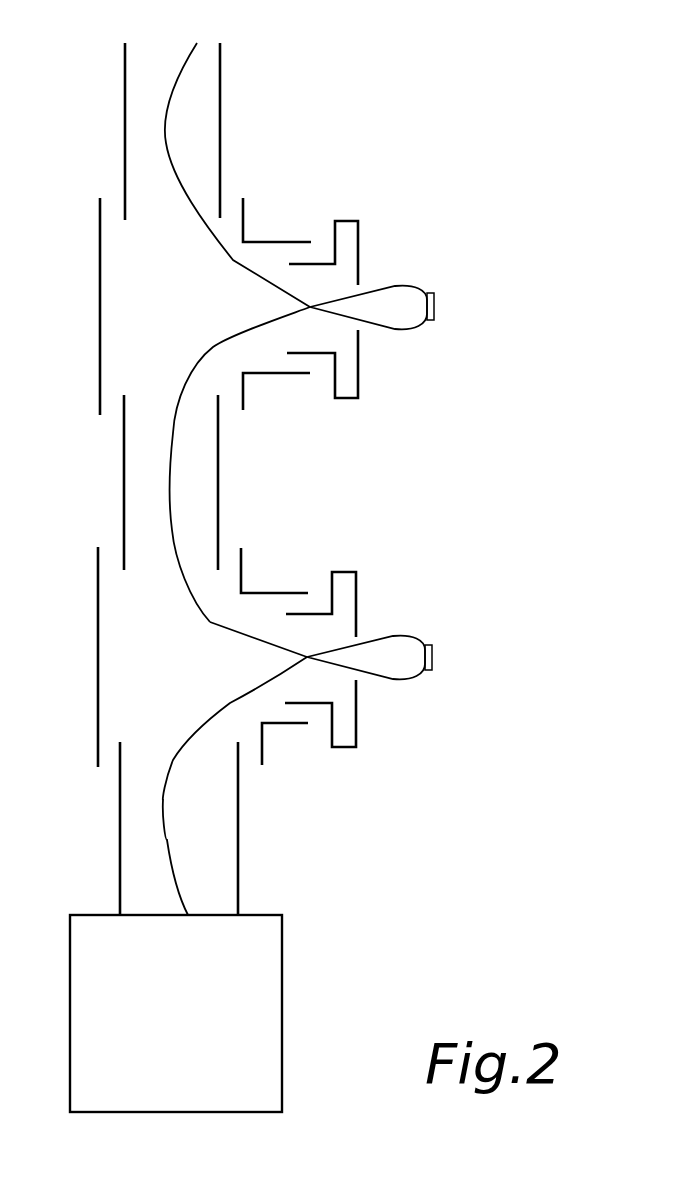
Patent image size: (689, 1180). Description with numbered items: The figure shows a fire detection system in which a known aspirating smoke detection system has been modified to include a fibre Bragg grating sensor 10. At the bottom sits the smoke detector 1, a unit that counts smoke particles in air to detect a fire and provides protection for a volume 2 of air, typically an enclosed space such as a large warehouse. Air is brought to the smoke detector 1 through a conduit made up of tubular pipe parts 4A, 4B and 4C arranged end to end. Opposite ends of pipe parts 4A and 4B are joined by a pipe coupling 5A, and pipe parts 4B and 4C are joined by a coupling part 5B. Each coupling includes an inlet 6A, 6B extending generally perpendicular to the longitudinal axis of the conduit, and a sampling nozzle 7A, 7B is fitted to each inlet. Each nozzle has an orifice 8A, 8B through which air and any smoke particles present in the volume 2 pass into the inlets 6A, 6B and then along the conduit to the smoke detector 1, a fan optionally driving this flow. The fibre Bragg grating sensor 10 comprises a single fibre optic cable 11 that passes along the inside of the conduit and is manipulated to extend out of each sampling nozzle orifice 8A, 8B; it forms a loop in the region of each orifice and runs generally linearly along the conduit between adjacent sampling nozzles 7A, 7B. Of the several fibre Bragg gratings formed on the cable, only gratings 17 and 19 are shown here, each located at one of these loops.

The smoke detector 1 is at (282, 980).
The volume 2 is at (582, 481).
The tubular pipe part 4A is at (238, 822).
The tubular pipe part 4B is at (217, 480).
The tubular pipe part 4C is at (220, 152).
The pipe coupling 5A is at (97, 731).
The coupling part 5B is at (100, 288).
The inlet 6A is at (283, 607).
The inlet 6B is at (285, 253).
The sampling nozzle 7A is at (357, 603).
The sampling nozzle 7B is at (358, 248).
The orifice 8A is at (360, 677).
The orifice 8B is at (360, 325).
The fibre Bragg grating sensor 10 is at (170, 474).
The fibre optic cable 11 is at (207, 627).
The fibre Bragg grating 17 is at (432, 660).
The fibre Bragg grating 19 is at (435, 305).